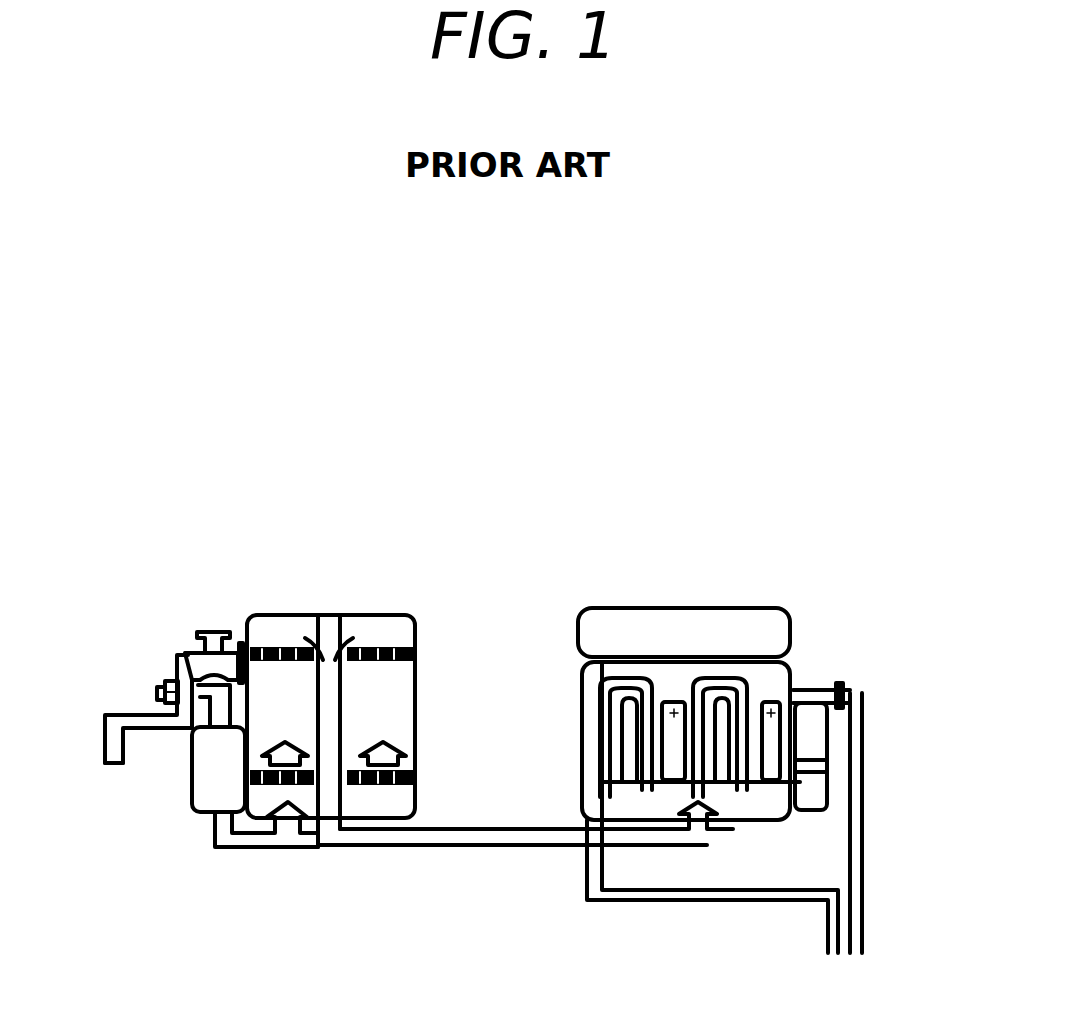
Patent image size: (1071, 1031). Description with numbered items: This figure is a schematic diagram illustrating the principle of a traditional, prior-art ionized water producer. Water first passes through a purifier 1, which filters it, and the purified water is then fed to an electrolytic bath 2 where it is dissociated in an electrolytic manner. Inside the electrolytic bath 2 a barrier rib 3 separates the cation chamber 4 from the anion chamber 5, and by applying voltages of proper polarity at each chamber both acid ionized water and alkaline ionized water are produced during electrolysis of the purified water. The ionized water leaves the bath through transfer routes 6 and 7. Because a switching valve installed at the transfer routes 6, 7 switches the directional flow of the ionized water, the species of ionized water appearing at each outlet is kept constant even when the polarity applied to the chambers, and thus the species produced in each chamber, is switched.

The purifier 1 is at (338, 612).
The electrolytic bath 2 is at (805, 664).
The barrier rib 3 is at (650, 700).
The cation chamber 4 is at (660, 688).
The anion chamber 5 is at (607, 735).
The transfer route 6 is at (723, 902).
The transfer route 7 is at (862, 829).